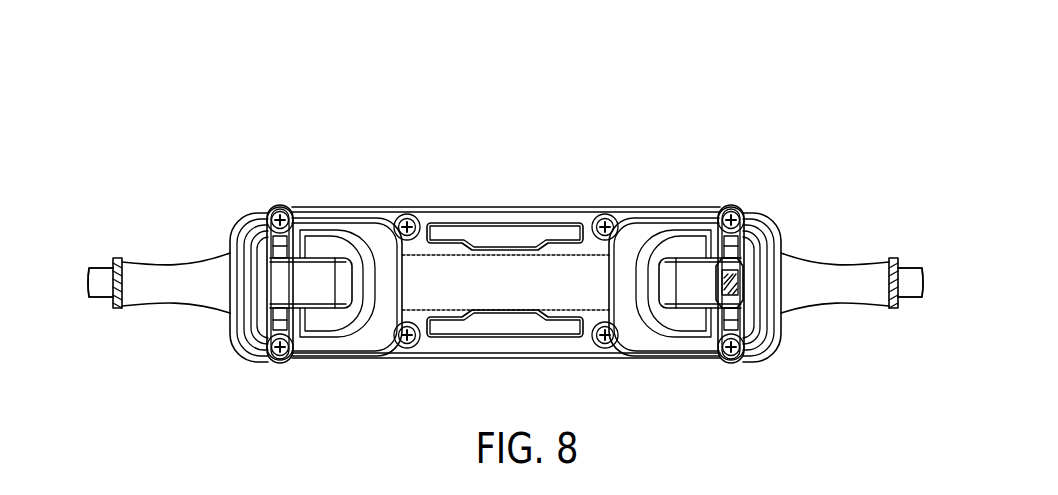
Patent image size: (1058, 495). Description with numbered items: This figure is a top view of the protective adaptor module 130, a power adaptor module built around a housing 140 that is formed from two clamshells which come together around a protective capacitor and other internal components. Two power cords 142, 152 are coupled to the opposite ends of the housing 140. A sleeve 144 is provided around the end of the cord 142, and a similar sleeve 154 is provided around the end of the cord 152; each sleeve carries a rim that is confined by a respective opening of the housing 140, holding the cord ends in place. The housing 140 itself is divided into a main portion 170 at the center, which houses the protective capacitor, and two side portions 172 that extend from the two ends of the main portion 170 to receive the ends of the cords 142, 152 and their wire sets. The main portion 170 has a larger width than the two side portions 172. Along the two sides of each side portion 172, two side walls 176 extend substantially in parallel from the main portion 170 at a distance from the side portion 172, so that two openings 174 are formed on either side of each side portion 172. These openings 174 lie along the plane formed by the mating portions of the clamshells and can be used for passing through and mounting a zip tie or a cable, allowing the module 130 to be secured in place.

The protective adaptor module 130 is at (650, 126).
The housing 140 is at (449, 162).
The power cord 142 is at (908, 273).
The sleeve 144 is at (840, 272).
The power cord 152 is at (104, 278).
The sleeve 154 is at (169, 273).
The main portion 170 is at (514, 256).
The side portion 172 is at (320, 273).
The opening 174 is at (299, 215).
The side wall 176 is at (318, 211).